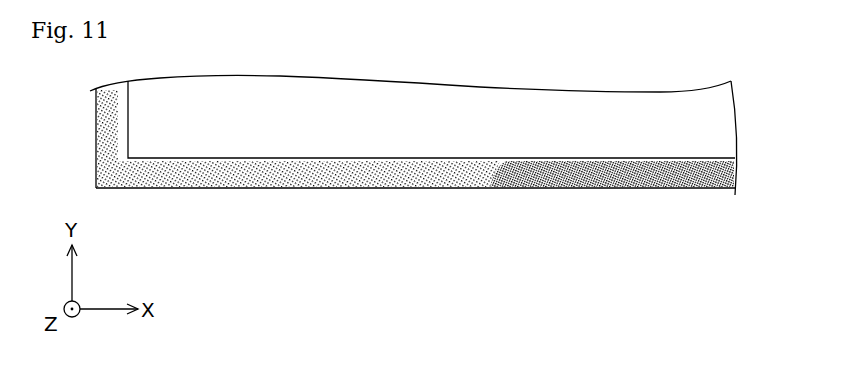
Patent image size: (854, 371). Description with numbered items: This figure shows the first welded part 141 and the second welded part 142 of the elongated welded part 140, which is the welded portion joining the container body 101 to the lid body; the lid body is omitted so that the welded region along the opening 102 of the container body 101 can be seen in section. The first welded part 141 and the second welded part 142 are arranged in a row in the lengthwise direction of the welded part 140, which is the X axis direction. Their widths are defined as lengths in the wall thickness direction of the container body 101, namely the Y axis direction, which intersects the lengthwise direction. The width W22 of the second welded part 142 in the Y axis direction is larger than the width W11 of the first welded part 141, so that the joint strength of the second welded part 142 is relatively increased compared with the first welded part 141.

The container body 101 is at (205, 190).
The opening 102 is at (160, 137).
The welded part 140 is at (415, 189).
The first welded part 141 is at (279, 177).
The second welded part 142 is at (553, 173).
The width of the first welded part W11 is at (339, 217).
The width of the second welded part W22 is at (609, 217).